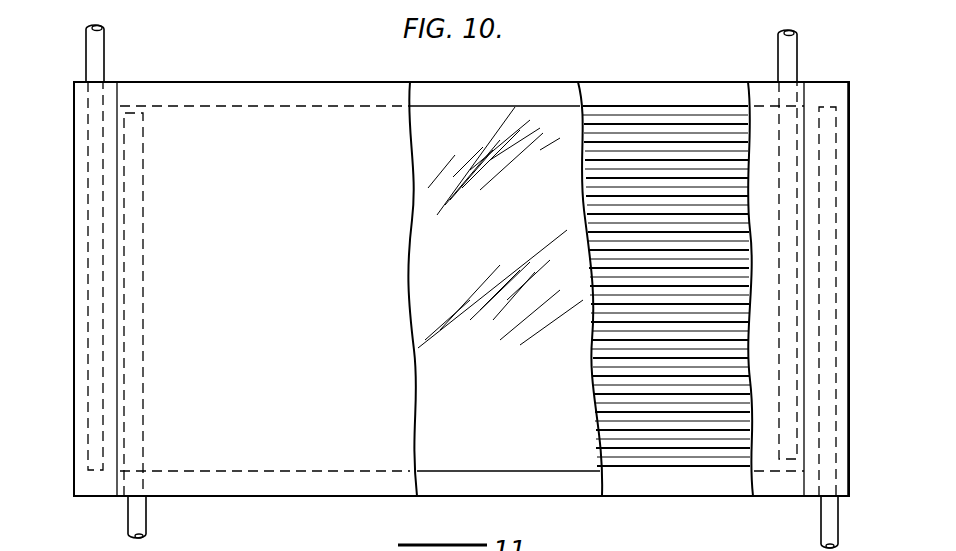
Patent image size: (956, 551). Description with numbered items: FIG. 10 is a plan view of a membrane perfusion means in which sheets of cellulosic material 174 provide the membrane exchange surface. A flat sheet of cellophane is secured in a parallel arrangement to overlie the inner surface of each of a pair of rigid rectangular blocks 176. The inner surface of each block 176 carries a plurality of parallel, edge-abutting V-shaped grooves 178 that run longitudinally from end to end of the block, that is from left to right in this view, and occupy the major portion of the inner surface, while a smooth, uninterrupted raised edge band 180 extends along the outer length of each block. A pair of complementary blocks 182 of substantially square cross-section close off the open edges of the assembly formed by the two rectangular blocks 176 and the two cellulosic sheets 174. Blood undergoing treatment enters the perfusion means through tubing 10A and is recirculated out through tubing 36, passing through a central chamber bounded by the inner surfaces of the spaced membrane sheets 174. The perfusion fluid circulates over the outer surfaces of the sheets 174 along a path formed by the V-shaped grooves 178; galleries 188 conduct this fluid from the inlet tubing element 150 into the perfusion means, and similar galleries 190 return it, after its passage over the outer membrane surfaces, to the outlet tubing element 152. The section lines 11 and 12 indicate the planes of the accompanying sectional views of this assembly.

The rigid rectangular block 176 is at (207, 120).
The raised edge band 180 is at (526, 92).
The V-shaped grooves 178 is at (668, 140).
The complementary block 182 is at (828, 85).
The inlet tubing element 150 is at (140, 515).
The outlet tubing element 152 is at (786, 50).
The tubing 10A is at (78, 25).
The tubing 36 is at (842, 508).
The section line 12 is at (288, 53).
The section line 11 is at (57, 236).
The galleries 188 is at (257, 543).
The galleries 190 is at (667, 543).
The sheets of cellulosic material 174 is at (750, 543).